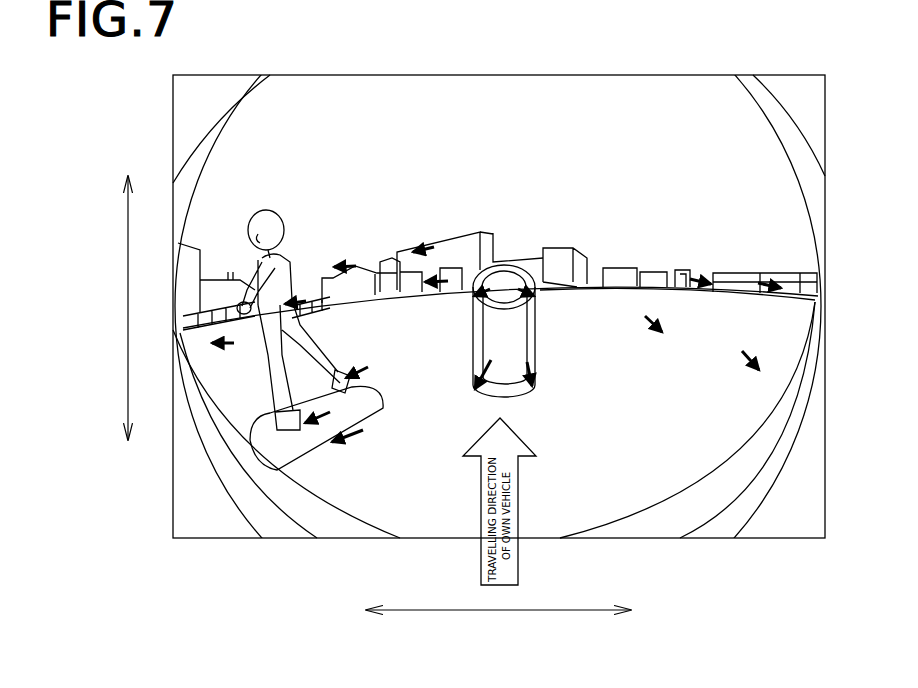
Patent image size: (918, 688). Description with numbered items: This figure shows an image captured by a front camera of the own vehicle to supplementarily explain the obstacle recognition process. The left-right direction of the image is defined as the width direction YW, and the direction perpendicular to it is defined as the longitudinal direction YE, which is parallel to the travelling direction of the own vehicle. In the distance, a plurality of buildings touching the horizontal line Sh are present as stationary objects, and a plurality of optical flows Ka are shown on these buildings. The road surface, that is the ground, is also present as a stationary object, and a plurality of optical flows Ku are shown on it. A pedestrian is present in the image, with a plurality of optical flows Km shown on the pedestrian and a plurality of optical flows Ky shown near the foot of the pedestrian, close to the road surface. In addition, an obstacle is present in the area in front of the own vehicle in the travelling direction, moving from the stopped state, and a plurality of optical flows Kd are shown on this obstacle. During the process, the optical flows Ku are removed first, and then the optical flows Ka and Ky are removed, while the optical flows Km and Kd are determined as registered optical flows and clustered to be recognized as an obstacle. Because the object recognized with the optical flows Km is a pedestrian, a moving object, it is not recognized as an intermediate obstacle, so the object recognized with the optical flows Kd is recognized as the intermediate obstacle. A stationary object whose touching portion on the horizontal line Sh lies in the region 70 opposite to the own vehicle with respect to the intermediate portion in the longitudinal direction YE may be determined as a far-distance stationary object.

The region 70 is at (830, 538).
The horizontal line sh is at (577, 268).
The optical flows Kd is at (533, 282).
The optical flows Ka is at (352, 262).
The optical flows Km is at (322, 304).
The optical flows Ky is at (330, 414).
The optical flows Ku is at (232, 343).
The longitudinal direction YE is at (118, 302).
The width direction YW is at (502, 612).